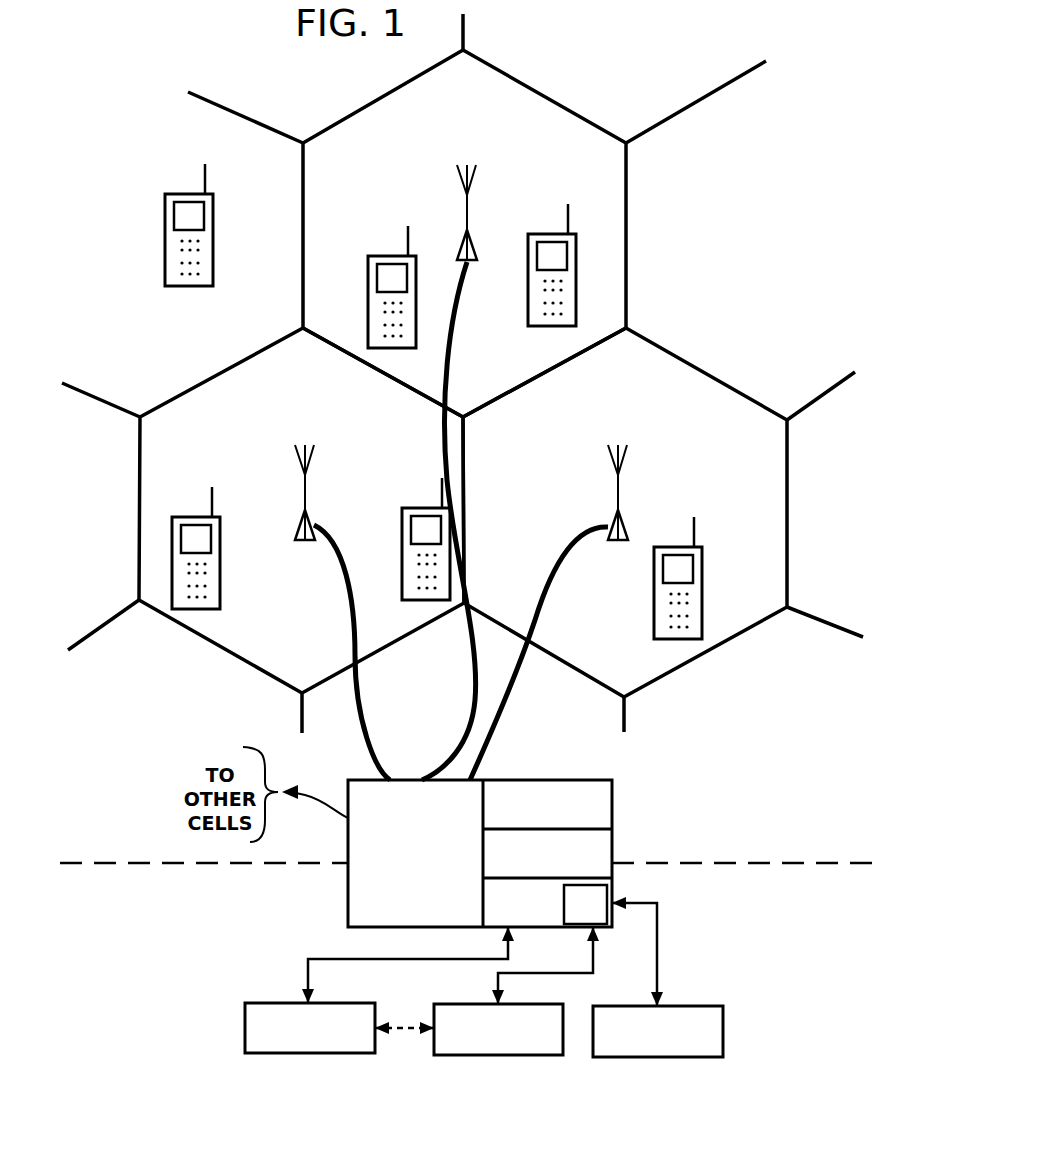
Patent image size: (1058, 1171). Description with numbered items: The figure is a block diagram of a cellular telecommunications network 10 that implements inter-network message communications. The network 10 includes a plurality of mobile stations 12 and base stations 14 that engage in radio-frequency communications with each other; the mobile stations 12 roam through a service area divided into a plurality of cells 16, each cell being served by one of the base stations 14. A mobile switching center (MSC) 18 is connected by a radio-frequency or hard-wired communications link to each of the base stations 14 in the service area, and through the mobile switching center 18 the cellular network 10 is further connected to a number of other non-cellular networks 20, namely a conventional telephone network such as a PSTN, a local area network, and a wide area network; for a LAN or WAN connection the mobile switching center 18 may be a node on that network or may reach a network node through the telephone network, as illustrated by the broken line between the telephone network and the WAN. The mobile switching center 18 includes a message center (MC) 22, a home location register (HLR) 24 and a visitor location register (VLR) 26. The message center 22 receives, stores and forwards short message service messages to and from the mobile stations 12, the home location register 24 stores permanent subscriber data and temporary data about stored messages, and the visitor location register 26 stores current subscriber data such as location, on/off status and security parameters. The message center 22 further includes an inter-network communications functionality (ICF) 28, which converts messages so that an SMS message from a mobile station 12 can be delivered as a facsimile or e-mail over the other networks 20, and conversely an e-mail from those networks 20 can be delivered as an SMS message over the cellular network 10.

The cellular telecommunications network 10 is at (703, 697).
The mobile station 12 is at (213, 270).
The base station 14 is at (470, 230).
The cell 16 is at (550, 122).
The mobile switching center 18 is at (526, 833).
The non-cellular networks 20 is at (477, 993).
The message center 22 is at (483, 906).
The home location register 24 is at (511, 788).
The visitor location register 26 is at (607, 847).
The inter-network communications functionality 28 is at (612, 893).